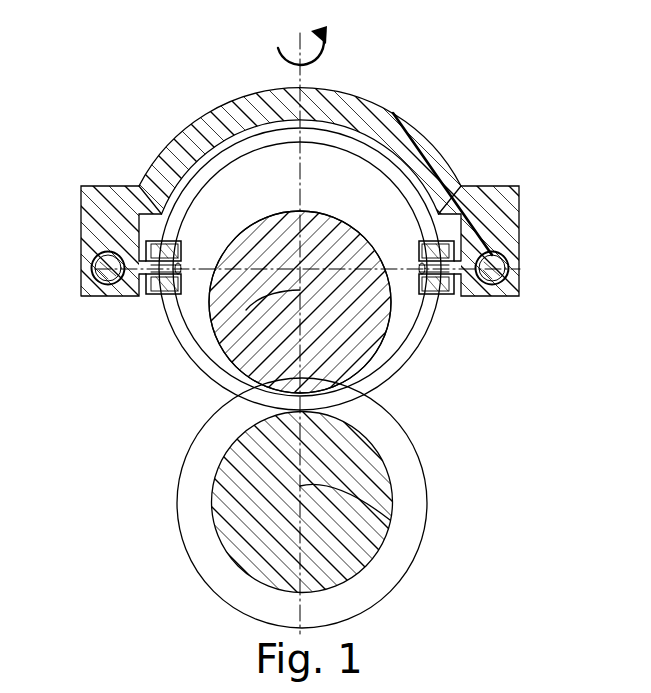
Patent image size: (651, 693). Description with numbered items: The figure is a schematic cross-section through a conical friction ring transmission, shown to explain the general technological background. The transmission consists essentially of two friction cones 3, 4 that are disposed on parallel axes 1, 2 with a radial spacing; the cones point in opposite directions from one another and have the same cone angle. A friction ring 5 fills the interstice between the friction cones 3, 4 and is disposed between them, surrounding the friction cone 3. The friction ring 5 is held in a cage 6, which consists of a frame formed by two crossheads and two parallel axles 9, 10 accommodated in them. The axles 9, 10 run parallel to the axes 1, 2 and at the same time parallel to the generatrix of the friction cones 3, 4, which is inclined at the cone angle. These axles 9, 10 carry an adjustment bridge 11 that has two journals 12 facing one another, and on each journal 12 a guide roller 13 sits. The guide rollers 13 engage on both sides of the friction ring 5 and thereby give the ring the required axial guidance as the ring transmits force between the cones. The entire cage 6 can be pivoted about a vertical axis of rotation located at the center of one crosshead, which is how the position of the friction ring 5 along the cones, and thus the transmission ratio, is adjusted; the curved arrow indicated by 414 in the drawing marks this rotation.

The axis 1 is at (260, 363).
The axis 2 is at (387, 530).
The friction cone 3 is at (245, 373).
The friction cone 4 is at (230, 530).
The friction ring 5 is at (410, 342).
The cage 6 is at (445, 170).
The axle 9 is at (101, 257).
The axle 10 is at (518, 258).
The adjustment bridge 11 is at (427, 131).
The journal 12 is at (126, 278).
The guide roller 13 is at (160, 296).
The direction of rotation 414 is at (297, 50).